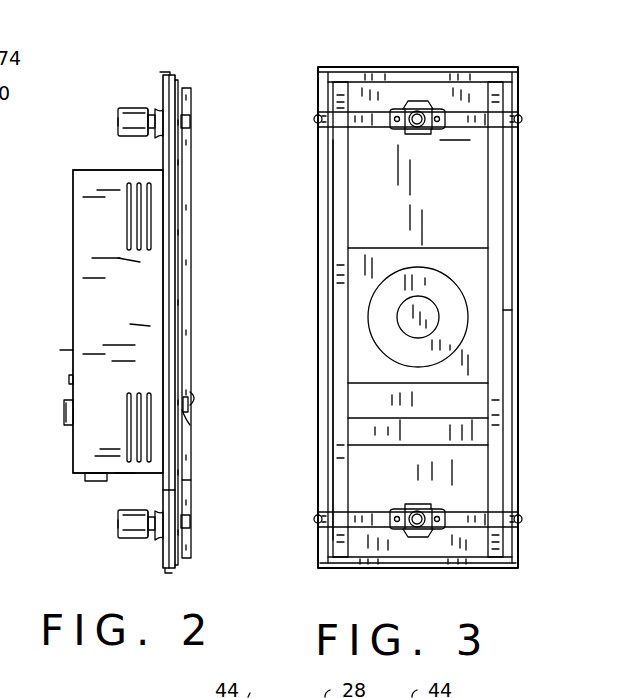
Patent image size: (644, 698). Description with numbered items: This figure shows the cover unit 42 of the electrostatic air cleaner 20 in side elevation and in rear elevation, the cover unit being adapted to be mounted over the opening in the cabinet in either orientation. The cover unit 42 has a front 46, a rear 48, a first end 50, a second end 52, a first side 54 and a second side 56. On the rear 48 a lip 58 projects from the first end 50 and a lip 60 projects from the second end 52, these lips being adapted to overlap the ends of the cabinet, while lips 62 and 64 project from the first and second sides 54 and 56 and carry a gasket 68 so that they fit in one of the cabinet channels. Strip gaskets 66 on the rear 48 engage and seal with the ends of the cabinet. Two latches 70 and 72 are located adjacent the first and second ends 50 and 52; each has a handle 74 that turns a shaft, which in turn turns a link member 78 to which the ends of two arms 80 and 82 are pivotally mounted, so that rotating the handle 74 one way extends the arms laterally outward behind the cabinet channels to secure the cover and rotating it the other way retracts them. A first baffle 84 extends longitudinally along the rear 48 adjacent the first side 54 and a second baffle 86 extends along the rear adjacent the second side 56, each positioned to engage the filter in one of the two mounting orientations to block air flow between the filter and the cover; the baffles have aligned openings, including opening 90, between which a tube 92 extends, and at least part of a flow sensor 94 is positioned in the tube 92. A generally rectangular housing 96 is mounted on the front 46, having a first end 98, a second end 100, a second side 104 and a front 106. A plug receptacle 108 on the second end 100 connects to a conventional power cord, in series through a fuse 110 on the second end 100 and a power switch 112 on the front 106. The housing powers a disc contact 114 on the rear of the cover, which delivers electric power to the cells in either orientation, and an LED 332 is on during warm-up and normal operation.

In FIG. 2, the electrostatic air cleaner 20 is at (0, 23).
In FIG. 2, the cover unit 42 is at (166, 499).
In FIG. 3, the cover unit 42 is at (453, 146).
In FIG. 2, the front 46 is at (58, 357).
In FIG. 2, the rear 48 is at (197, 490).
In FIG. 3, the rear 48 is at (440, 190).
In FIG. 2, the first end 50 is at (143, 570).
In FIG. 3, the first end 50 is at (383, 60).
In FIG. 2, the second end 52 is at (133, 90).
In FIG. 3, the second end 52 is at (398, 578).
In FIG. 3, the first side 54 is at (525, 318).
In FIG. 2, the second side 56 is at (118, 258).
In FIG. 3, the second side 56 is at (302, 227).
In FIG. 2, the lip 58 is at (169, 73).
In FIG. 3, the lip 58 is at (478, 65).
In FIG. 2, the lip 60 is at (170, 573).
In FIG. 3, the lip 60 is at (500, 572).
In FIG. 3, the lip 62 is at (518, 420).
In FIG. 2, the lip 64 is at (130, 324).
In FIG. 3, the lip 64 is at (317, 332).
In FIG. 3, the strip gasket 66 is at (348, 75).
In FIG. 2, the gasket 68 is at (173, 195).
In FIG. 3, the gasket 68 is at (320, 96).
In FIG. 2, the latch 70 is at (108, 118).
In FIG. 2, the latch 72 is at (110, 535).
In FIG. 2, the handle 74 is at (120, 108).
In FIG. 3, the link member 78 is at (414, 130).
In FIG. 3, the arm 80 is at (507, 110).
In FIG. 3, the arm 82 is at (325, 128).
In FIG. 3, the first baffle 84 is at (495, 250).
In FIG. 3, the second baffle 86 is at (338, 183).
In FIG. 2, the opening 90 is at (186, 417).
In FIG. 2, the tube 92 is at (190, 380).
In FIG. 3, the tube 92 is at (362, 430).
In FIG. 2, the flow sensor 94 is at (188, 404).
In FIG. 2, the housing 96 is at (95, 222).
In FIG. 2, the first end 98 is at (107, 168).
In FIG. 2, the second end 100 is at (82, 475).
In FIG. 2, the second side 104 is at (142, 306).
In FIG. 2, the front 106 is at (73, 190).
In FIG. 2, the plug receptacle 108 is at (120, 478).
In FIG. 2, the fuse 110 is at (95, 482).
In FIG. 2, the power switch 112 is at (64, 415).
In FIG. 3, the disc contact 114 is at (420, 317).
In FIG. 2, the LED 332 is at (68, 379).